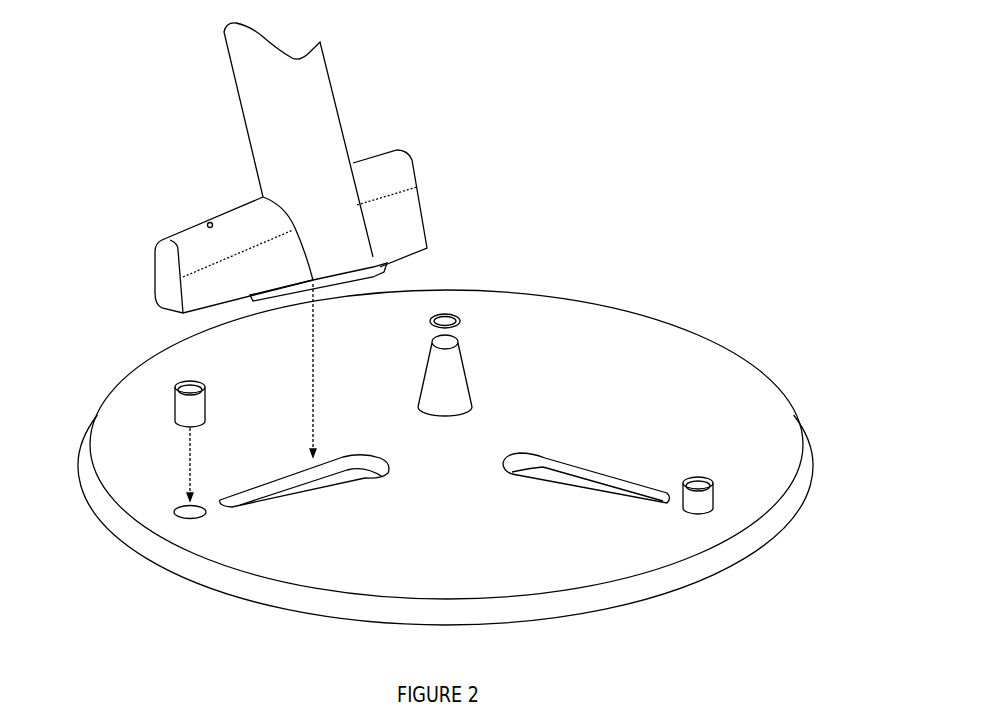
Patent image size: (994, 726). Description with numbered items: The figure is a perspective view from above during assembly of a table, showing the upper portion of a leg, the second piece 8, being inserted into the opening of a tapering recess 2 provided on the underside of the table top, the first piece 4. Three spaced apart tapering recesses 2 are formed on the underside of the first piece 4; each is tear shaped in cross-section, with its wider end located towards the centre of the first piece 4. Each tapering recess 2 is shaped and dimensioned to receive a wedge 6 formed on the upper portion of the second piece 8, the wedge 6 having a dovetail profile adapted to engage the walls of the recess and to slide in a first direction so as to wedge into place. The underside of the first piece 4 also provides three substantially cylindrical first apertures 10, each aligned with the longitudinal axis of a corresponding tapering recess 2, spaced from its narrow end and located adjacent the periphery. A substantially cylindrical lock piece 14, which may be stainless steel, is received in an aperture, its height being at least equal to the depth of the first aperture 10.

The tapering recess 2 is at (458, 369).
The first piece 4 is at (668, 448).
The wedge 6 is at (375, 266).
The second piece 8 is at (312, 125).
The first aperture 10 is at (183, 519).
The lock piece 14 is at (197, 417).